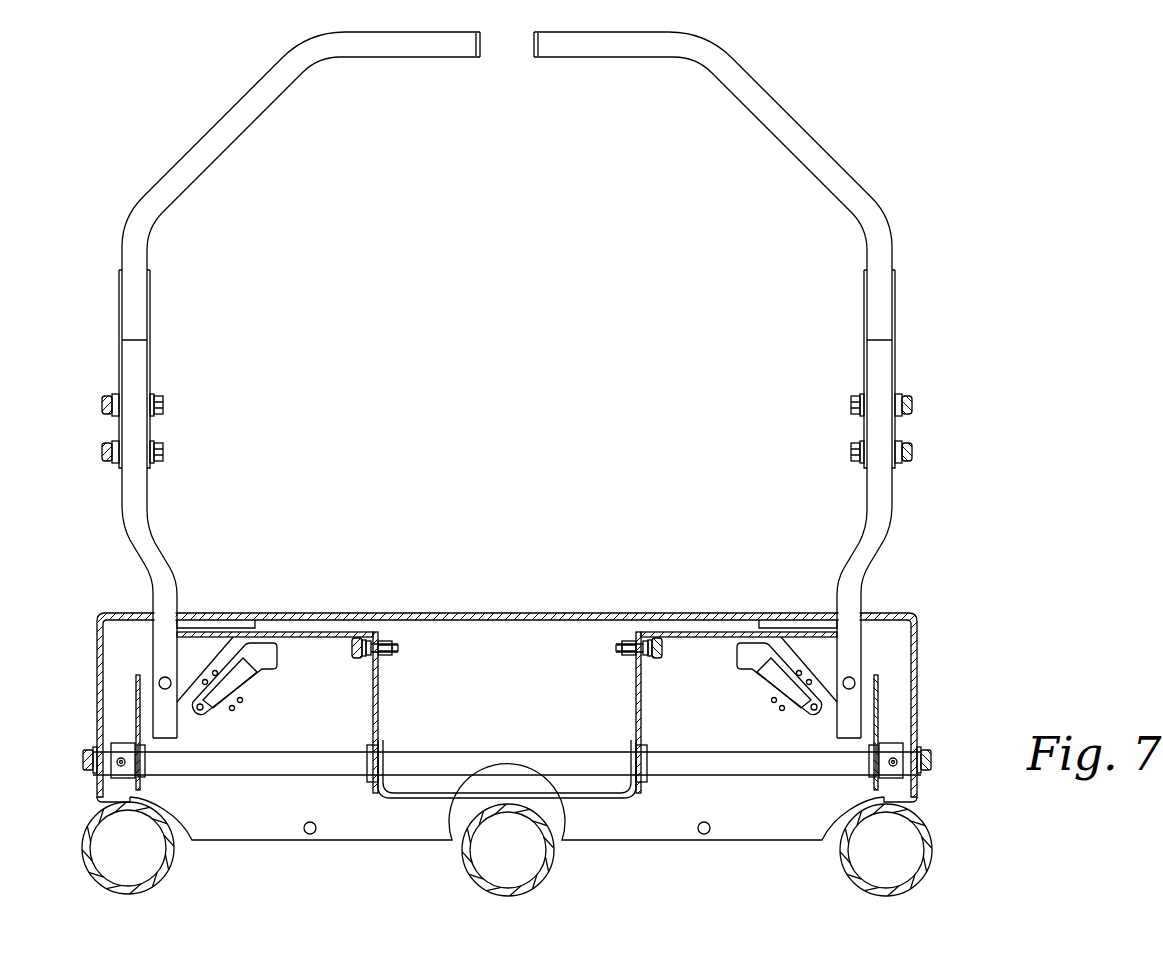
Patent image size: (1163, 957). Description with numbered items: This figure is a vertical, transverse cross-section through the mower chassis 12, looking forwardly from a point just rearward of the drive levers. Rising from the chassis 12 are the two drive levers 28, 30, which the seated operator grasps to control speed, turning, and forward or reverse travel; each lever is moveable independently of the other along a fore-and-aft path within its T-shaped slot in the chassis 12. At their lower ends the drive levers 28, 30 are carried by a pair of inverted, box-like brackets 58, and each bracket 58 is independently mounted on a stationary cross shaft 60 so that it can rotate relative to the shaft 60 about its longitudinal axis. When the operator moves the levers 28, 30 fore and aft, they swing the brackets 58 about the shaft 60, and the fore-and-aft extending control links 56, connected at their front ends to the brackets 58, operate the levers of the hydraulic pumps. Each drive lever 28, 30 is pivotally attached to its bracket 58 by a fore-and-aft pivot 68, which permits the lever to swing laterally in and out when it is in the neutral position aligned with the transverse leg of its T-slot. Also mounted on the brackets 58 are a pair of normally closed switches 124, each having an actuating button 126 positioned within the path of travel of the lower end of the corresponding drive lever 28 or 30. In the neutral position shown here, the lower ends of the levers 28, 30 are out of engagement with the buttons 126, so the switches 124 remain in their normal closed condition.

The mobile chassis 12 is at (927, 840).
The drive lever 28 is at (218, 148).
The drive lever 30 is at (798, 157).
The control link 56 is at (355, 658).
The box-like bracket 58 is at (307, 647).
The cross shaft 60 is at (303, 763).
The fore-and-aft pivot 68 is at (158, 683).
The normally closed switch 124 is at (237, 680).
The actuating button 126 is at (205, 711).